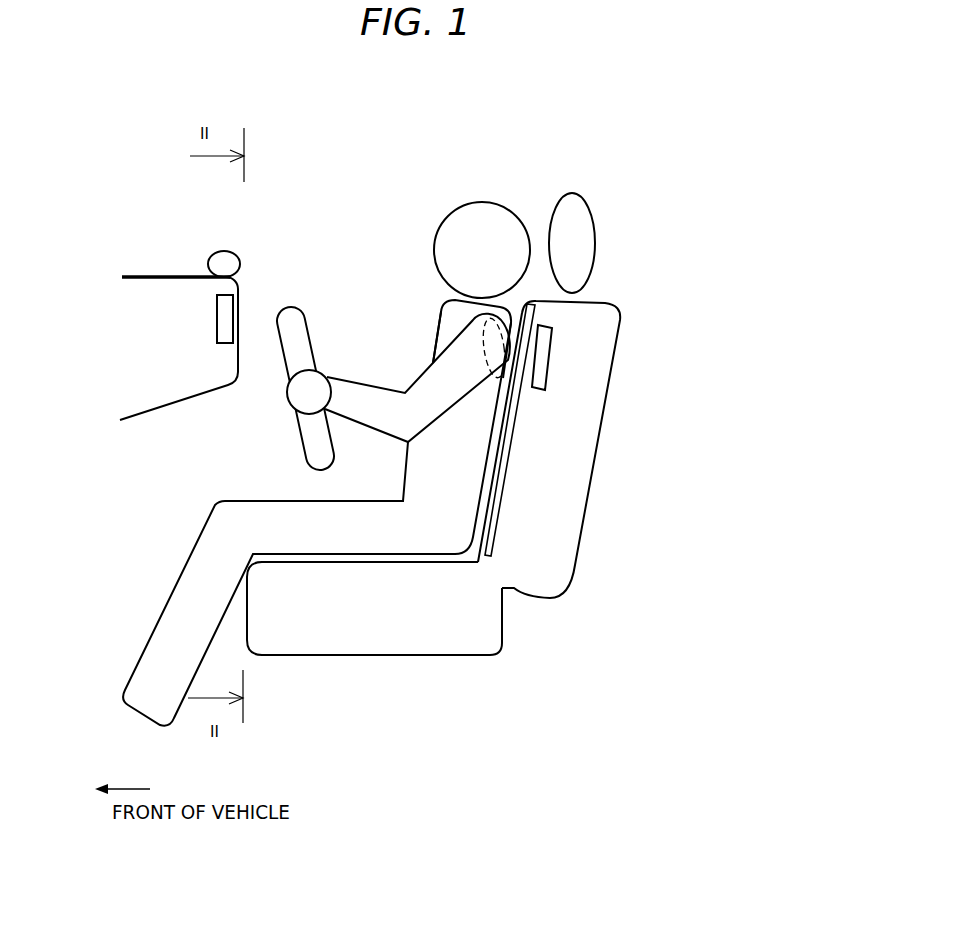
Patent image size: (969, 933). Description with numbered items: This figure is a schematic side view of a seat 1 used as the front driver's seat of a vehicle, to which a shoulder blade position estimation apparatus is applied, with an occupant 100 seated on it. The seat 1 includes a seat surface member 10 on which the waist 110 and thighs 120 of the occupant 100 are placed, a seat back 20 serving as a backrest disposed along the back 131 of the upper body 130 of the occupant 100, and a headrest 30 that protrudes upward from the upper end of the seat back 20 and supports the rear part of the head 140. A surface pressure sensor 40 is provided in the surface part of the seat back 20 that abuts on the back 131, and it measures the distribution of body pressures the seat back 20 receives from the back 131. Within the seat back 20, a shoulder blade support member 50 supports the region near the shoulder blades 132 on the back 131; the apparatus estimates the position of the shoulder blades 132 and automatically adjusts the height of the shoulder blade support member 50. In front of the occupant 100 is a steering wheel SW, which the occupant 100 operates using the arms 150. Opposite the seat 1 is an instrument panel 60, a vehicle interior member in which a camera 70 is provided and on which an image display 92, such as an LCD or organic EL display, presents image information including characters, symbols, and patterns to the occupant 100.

The seat 1 is at (622, 250).
The seat surface member 10 is at (378, 642).
The seat back 20 is at (612, 341).
The headrest 30 is at (585, 203).
The surface pressure sensor 40 is at (502, 490).
The shoulder blade support member 50 is at (555, 335).
The instrument panel 60 is at (153, 277).
The camera 70 is at (215, 262).
The image display 92 is at (218, 317).
The steering wheel SW is at (285, 356).
The occupant 100 is at (411, 420).
The waist 110 is at (447, 543).
The thighs 120 is at (295, 543).
The upper body 130 is at (435, 347).
The back 131 is at (503, 378).
The shoulder blades 132 is at (490, 362).
The head 140 is at (469, 208).
The arms 150 is at (373, 388).